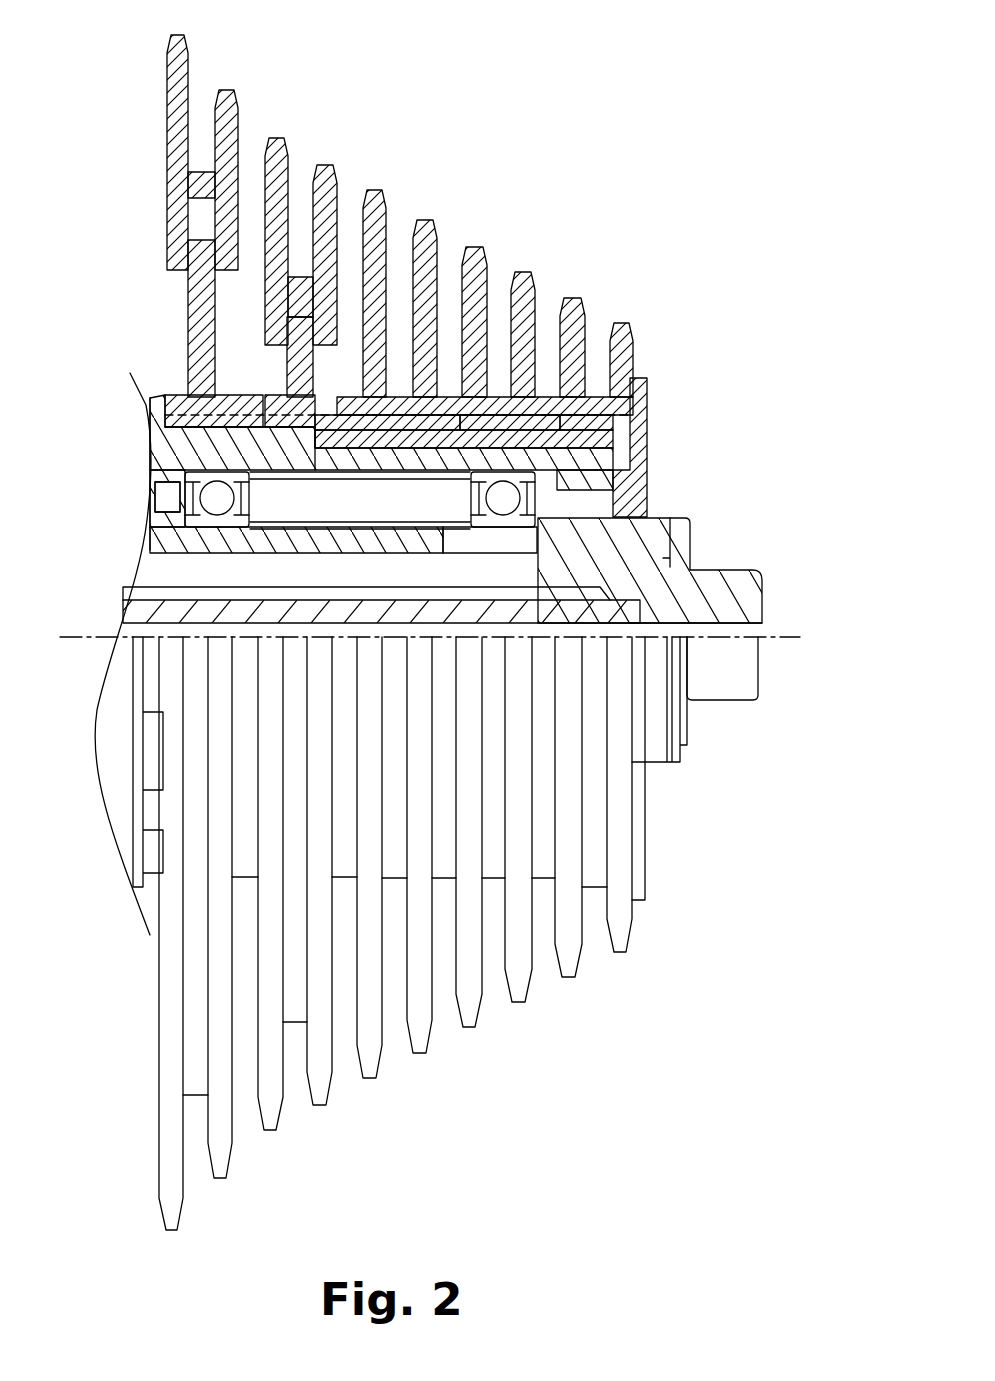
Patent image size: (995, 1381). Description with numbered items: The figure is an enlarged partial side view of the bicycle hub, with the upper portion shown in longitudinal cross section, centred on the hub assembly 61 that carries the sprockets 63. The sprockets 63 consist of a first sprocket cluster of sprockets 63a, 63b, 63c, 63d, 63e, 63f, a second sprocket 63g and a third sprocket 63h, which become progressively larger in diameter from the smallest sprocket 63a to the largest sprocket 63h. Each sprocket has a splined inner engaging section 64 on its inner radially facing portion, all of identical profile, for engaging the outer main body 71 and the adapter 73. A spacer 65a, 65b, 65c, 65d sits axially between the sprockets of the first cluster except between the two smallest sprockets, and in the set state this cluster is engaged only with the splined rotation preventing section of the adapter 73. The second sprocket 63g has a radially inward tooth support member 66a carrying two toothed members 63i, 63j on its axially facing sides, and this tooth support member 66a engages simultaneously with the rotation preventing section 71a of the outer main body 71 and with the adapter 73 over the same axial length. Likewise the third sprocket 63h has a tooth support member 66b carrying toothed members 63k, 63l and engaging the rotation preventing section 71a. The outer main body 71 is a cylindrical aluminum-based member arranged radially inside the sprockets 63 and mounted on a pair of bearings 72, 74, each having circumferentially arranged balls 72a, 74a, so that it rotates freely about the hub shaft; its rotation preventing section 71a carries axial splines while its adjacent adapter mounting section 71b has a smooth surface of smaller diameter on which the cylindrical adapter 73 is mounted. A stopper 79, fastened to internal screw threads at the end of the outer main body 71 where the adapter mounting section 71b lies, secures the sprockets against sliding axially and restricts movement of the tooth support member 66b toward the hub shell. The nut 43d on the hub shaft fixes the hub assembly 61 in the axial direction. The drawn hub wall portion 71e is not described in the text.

The hub assembly 61 is at (762, 100).
The sprockets 63 is at (671, 215).
The sprocket 63a is at (622, 357).
The sprocket 63b is at (570, 350).
The sprocket 63c is at (518, 315).
The sprocket 63d is at (480, 265).
The sprocket 63e is at (422, 262).
The sprocket 63f is at (393, 397).
The second sprocket 63g is at (307, 167).
The third sprocket 63h is at (203, 103).
The toothed member 63i is at (328, 190).
The toothed member 63j is at (280, 170).
The toothed member 63k is at (230, 112).
The toothed member 63l is at (180, 62).
The inner engaging section 64 is at (180, 440).
The spacer 65a is at (640, 383).
The spacer 65b is at (575, 395).
The spacer 65c is at (530, 397).
The spacer 65d is at (450, 397).
The tooth support member 66a is at (297, 430).
The tooth support member 66b is at (190, 300).
The outer main body 71 is at (157, 477).
The rotation preventing section 71a is at (212, 430).
The adapter mounting section 71b is at (605, 470).
The hub end wall 71e is at (135, 368).
The bearing 72 is at (205, 545).
The balls 72a is at (217, 503).
The adapter 73 is at (612, 440).
The bearing 74 is at (552, 503).
The balls 74a is at (500, 508).
The stopper 79 is at (650, 500).
The nut 43d is at (762, 566).